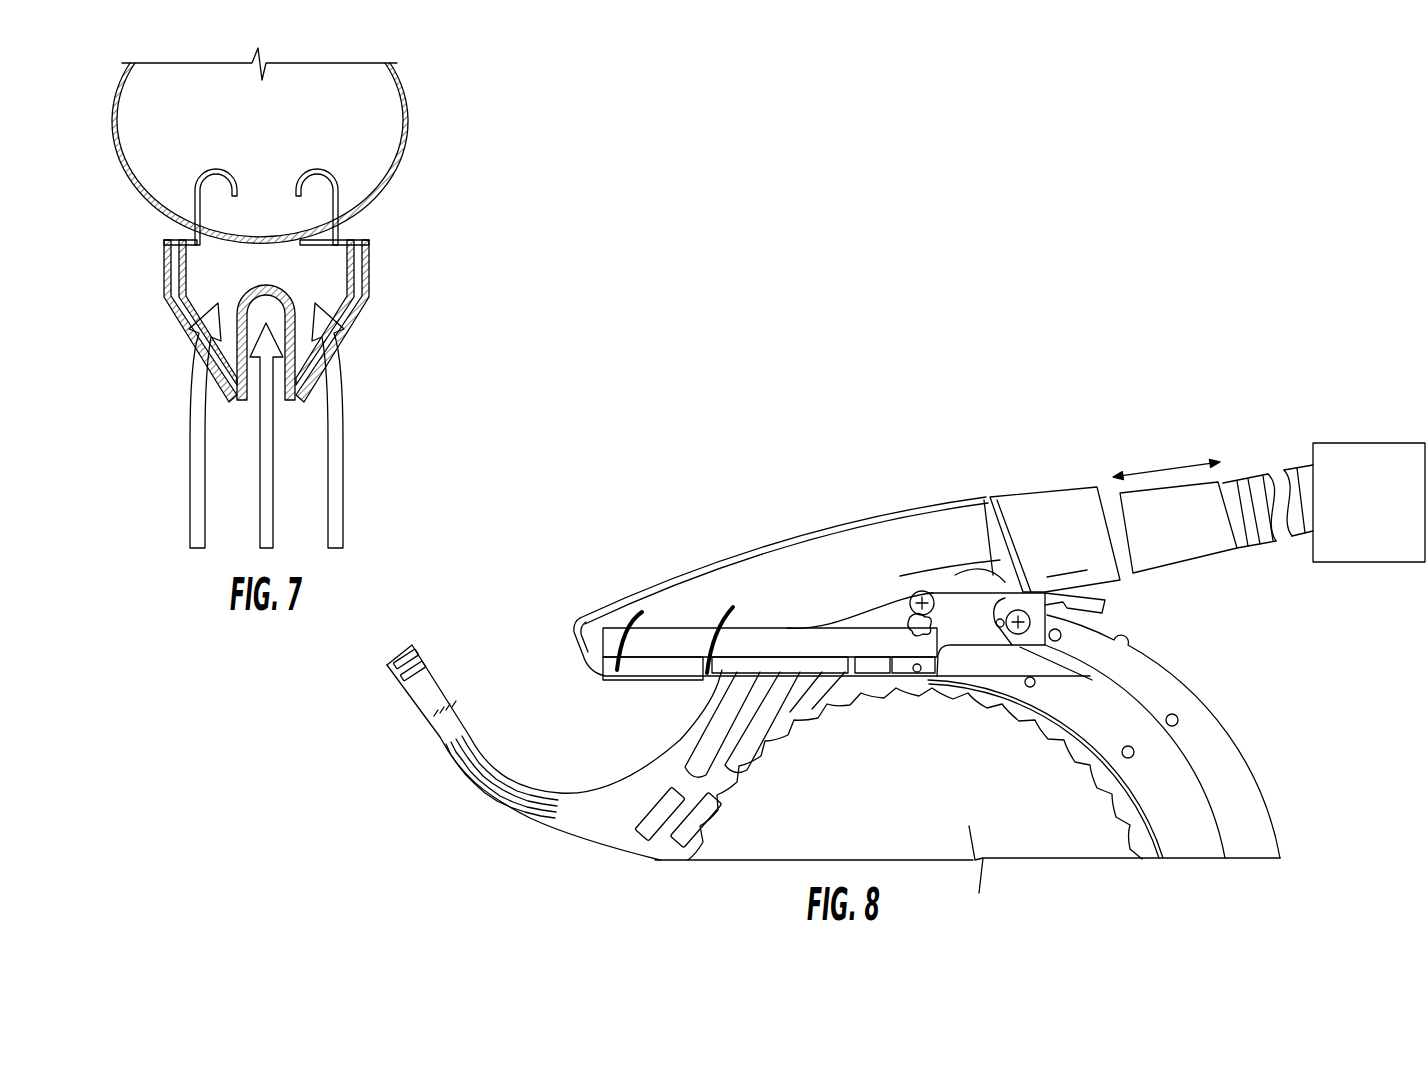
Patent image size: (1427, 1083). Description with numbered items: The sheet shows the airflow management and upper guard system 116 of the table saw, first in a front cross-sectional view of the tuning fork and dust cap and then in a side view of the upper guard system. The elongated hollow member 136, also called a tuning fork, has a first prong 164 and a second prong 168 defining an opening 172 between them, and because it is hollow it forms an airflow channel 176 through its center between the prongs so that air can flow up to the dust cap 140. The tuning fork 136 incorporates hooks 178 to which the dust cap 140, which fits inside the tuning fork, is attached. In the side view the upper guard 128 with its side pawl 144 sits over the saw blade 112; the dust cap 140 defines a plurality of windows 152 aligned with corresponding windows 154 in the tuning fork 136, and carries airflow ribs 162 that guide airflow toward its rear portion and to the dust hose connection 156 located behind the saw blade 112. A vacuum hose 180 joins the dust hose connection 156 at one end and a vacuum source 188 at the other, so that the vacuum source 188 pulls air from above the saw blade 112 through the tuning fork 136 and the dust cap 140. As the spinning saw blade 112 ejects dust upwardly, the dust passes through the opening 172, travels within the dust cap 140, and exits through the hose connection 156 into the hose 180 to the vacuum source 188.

In FIG. 8, the saw blade 112 is at (940, 817).
In FIG. 8, the airflow management and upper guard system 116 is at (603, 535).
In FIG. 8, the upper guard 128 is at (445, 775).
In FIG. 7, the elongated hollow member 136 is at (362, 339).
In FIG. 8, the elongated hollow member 136 is at (672, 627).
In FIG. 7, the dust cap 140 is at (409, 118).
In FIG. 8, the dust cap 140 is at (833, 543).
In FIG. 8, the side pawl 144 is at (510, 787).
In FIG. 8, the windows 152 is at (747, 667).
In FIG. 8, the windows 154 is at (765, 657).
In FIG. 8, the dust hose connection 156 is at (1062, 510).
In FIG. 8, the airflow ribs 162 is at (632, 610).
In FIG. 7, the first prong 164 is at (181, 323).
In FIG. 7, the second prong 168 is at (370, 270).
In FIG. 7, the opening 172 is at (286, 412).
In FIG. 7, the airflow channel 176 is at (303, 266).
In FIG. 7, the hooks 178 is at (194, 208).
In FIG. 8, the vacuum hose 180 is at (1157, 560).
In FIG. 8, the vacuum source 188 is at (1397, 453).